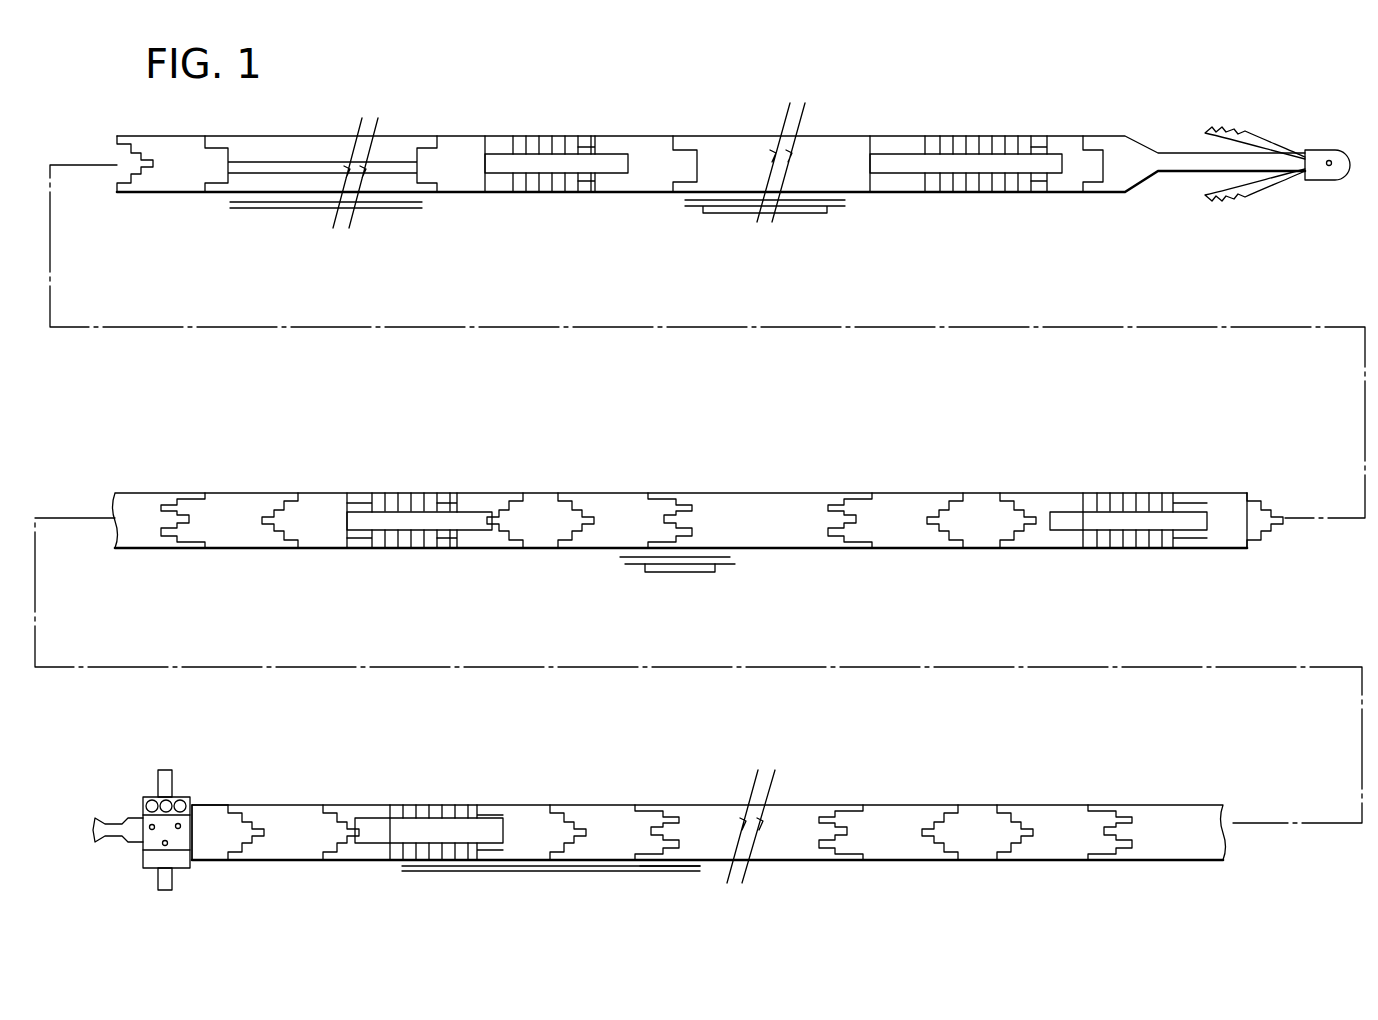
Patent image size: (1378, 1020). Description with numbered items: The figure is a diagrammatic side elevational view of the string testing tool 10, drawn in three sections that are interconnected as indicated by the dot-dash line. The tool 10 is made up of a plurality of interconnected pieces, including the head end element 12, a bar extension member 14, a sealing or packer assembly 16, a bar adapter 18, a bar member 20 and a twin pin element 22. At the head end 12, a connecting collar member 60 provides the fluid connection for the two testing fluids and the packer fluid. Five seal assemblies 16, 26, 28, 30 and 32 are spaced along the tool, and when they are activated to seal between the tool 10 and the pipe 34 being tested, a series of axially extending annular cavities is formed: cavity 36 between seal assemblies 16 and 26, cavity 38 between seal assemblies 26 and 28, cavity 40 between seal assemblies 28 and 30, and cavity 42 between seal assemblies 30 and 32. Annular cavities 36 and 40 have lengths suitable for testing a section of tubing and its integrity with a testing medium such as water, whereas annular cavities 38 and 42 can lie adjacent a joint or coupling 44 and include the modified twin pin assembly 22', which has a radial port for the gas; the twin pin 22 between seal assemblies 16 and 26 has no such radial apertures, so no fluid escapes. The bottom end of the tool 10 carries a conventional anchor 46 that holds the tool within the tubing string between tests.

The string testing tool 10 is at (88, 748).
The head end element 12 is at (200, 800).
The bar extension member 14 is at (262, 805).
The sealing or packer assembly 16 is at (535, 798).
The bar adapter 18 is at (152, 195).
The bar member 20 is at (322, 136).
The twin pin element 22 is at (977, 805).
The modified twin pin assembly 22' is at (761, 294).
The seal assembly 26 is at (505, 488).
The seal assembly 28 is at (1240, 488).
The seal assembly 30 is at (650, 133).
The seal assembly 32 is at (897, 133).
The pipe 34 is at (455, 871).
The annular cavity 36 is at (668, 866).
The annular cavity 38 is at (672, 552).
The annular cavity 40 is at (268, 200).
The annular cavity 42 is at (800, 200).
The joint or coupling 44 is at (712, 568).
The anchor 46 is at (1192, 126).
The connecting collar member 60 is at (150, 870).